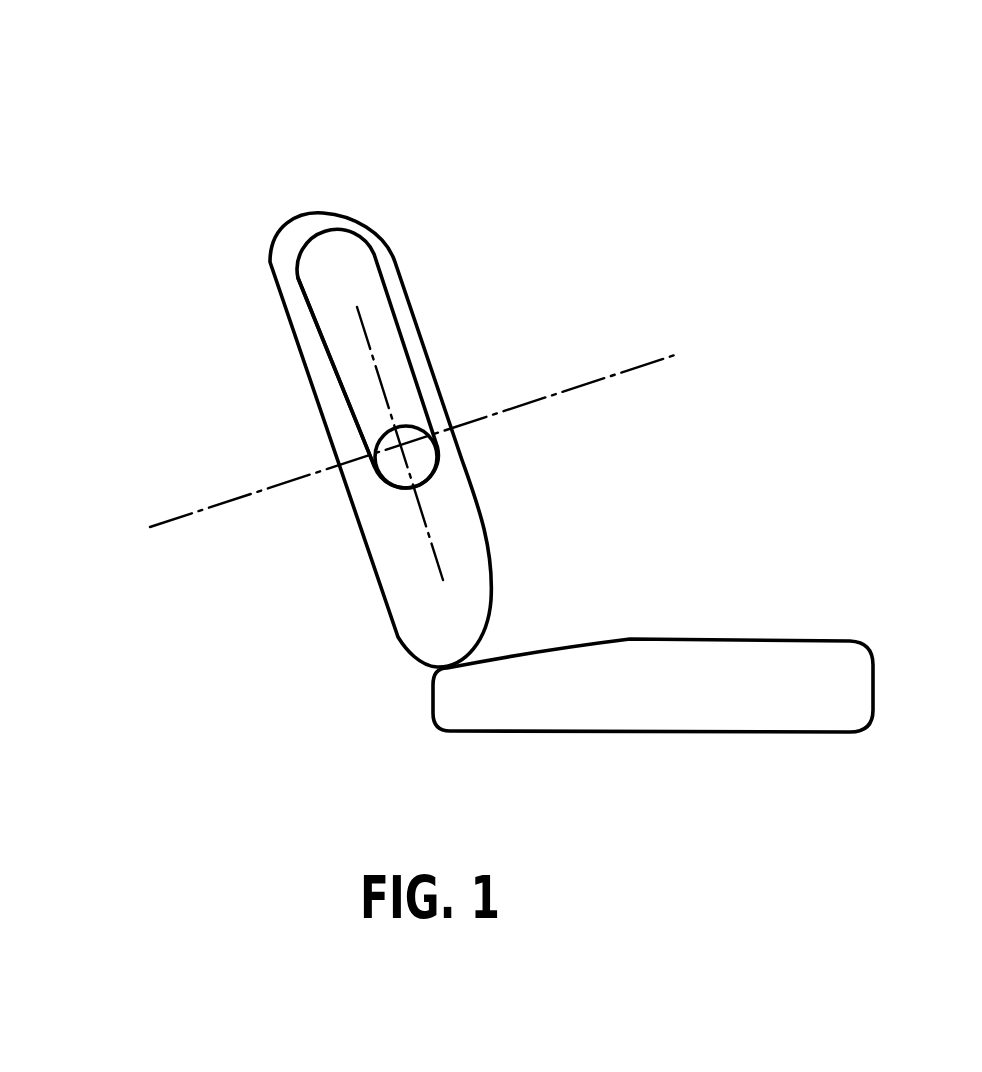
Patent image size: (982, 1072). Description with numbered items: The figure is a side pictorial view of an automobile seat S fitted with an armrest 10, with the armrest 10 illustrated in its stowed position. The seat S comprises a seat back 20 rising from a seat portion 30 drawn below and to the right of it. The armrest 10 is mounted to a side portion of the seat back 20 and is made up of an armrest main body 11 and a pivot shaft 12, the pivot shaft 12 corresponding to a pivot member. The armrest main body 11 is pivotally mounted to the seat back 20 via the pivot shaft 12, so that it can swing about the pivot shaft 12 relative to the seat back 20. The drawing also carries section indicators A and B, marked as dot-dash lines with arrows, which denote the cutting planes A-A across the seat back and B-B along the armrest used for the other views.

The seat S is at (213, 303).
The armrest 10 is at (317, 243).
The armrest main body 11 is at (337, 342).
The pivot shaft 12 is at (393, 482).
The seat back 20 is at (400, 262).
The seat portion 30 is at (725, 640).
The section line A- A is at (249, 483).
The section line B- B is at (378, 327).